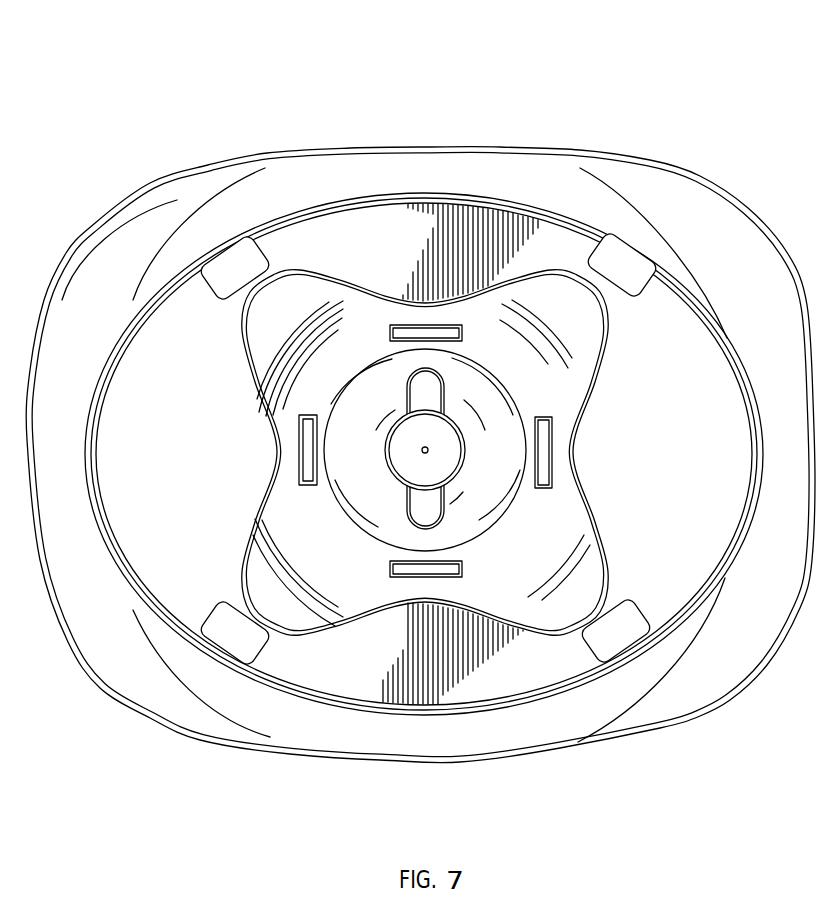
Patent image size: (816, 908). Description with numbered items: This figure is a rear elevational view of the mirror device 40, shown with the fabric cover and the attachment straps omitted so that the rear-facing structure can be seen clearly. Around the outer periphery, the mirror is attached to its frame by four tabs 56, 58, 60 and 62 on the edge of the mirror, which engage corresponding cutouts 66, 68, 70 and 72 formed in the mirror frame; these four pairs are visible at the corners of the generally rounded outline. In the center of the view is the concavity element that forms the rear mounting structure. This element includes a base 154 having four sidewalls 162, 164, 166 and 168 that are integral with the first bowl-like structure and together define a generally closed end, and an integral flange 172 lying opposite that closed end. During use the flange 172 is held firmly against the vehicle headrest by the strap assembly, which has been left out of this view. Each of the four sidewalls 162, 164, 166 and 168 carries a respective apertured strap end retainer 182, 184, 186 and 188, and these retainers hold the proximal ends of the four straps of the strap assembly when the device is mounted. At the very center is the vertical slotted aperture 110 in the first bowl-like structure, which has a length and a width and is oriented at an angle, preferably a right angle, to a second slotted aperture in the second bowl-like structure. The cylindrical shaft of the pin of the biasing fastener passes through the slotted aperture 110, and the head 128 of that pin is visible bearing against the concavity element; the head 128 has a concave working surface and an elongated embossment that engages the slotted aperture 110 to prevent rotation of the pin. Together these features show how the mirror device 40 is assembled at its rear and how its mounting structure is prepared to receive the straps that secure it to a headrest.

The mirror device 40 is at (628, 62).
The tab 56 is at (626, 267).
The tab 58 is at (230, 272).
The tab 60 is at (220, 622).
The tab 62 is at (622, 650).
The cutout 66 is at (626, 295).
The cutout 68 is at (234, 288).
The cutout 70 is at (212, 628).
The cutout 72 is at (631, 618).
The slotted aperture 110 is at (429, 390).
The head 128 is at (449, 443).
The base 154 is at (548, 387).
The sidewall 162 is at (512, 322).
The sidewall 164 is at (544, 524).
The sidewall 166 is at (397, 600).
The sidewall 168 is at (300, 457).
The flange 172 is at (302, 292).
The apertured strap end retainer 182 is at (407, 336).
The apertured strap end retainer 184 is at (548, 446).
The apertured strap end retainer 186 is at (460, 565).
The apertured strap end retainer 188 is at (302, 478).